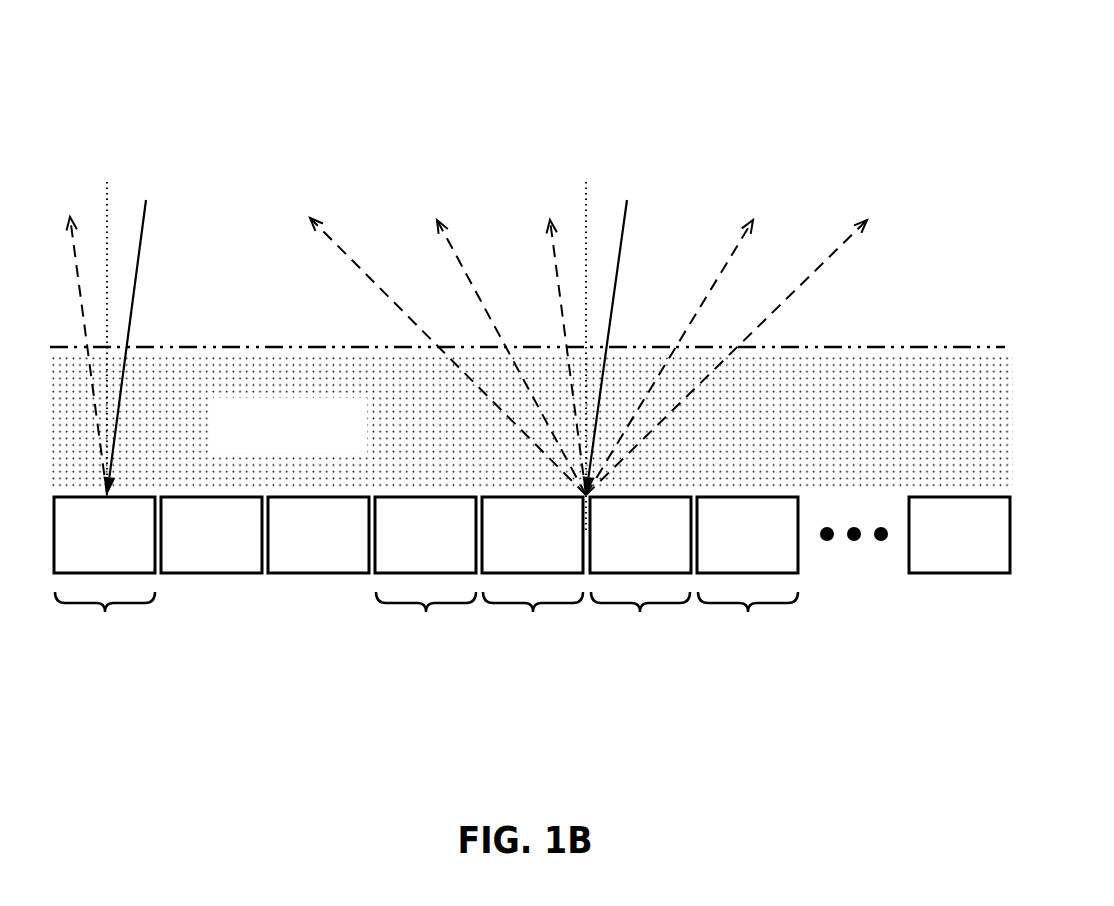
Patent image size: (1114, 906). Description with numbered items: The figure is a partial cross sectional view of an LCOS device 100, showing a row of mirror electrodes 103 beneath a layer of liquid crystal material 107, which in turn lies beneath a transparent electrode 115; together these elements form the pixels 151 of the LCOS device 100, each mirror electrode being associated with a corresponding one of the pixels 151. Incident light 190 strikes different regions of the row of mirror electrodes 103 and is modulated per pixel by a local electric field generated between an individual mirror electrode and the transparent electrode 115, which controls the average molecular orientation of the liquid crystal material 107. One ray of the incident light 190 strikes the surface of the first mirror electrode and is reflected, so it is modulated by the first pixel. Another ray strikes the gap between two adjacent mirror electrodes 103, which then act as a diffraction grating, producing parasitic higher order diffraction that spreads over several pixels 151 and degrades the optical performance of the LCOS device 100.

The LCOS device 100 is at (928, 44).
The mirror electrodes 103 is at (532, 535).
The liquid crystal material 107 is at (531, 422).
The transparent electrode 115 is at (1001, 347).
The pixels 151 is at (426, 619).
The incident light 190 is at (471, 336).